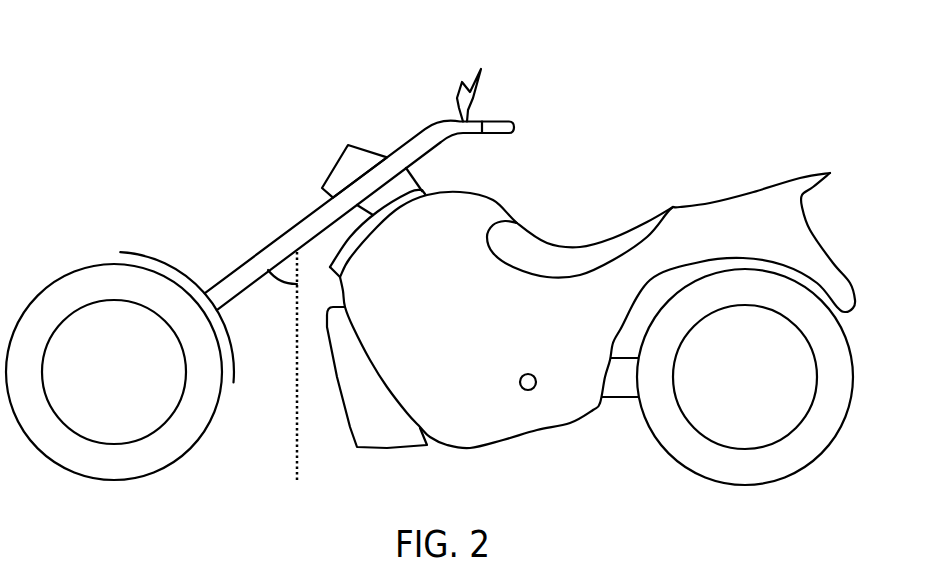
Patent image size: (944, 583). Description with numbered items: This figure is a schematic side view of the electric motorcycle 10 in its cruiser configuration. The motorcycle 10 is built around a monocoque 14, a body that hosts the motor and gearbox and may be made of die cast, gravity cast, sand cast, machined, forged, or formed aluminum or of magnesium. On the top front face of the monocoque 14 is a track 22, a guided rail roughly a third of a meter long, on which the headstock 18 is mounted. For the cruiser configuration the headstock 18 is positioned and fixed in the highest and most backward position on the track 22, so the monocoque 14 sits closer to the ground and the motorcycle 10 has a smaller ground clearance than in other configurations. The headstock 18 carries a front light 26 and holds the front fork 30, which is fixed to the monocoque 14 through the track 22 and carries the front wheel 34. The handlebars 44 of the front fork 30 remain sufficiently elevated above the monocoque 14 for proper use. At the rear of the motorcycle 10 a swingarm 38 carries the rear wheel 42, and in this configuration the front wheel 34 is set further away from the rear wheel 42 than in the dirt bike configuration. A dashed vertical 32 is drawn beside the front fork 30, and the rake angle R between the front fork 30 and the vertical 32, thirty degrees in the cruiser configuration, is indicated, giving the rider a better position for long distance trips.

The motorcycle 10 is at (132, 75).
The monocoque 14 is at (518, 221).
The headstock 18 is at (413, 178).
The track 22 is at (424, 197).
The front light 26 is at (328, 173).
The front fork 30 is at (400, 146).
The vertical 32 is at (297, 428).
The front wheel 34 is at (80, 273).
The swingarm 38 is at (619, 398).
The rear wheel 42 is at (853, 373).
The handlebars 44 is at (495, 122).